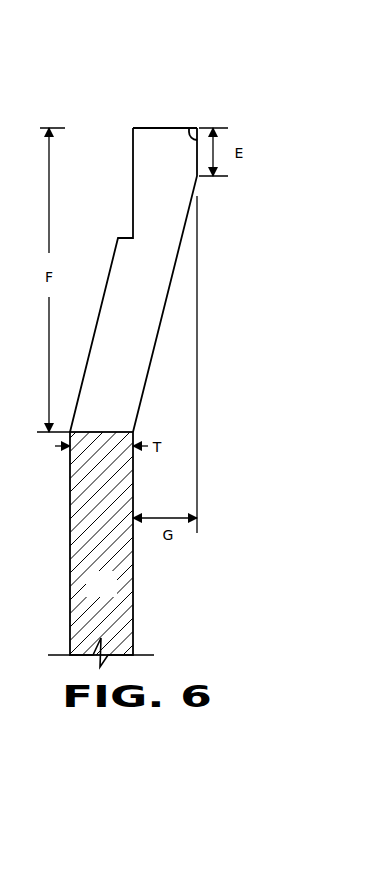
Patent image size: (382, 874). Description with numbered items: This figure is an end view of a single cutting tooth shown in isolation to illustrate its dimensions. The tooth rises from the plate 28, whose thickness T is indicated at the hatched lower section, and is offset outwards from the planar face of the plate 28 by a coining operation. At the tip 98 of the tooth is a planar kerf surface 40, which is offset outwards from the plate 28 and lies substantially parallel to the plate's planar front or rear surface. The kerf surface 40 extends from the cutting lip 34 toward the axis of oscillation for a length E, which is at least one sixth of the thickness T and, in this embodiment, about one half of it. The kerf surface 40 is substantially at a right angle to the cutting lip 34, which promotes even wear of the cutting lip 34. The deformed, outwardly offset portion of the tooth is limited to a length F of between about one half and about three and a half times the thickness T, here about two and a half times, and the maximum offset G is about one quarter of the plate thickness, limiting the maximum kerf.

The tip 98 is at (177, 170).
The cutting lip 34 is at (167, 128).
The kerf surface 40 is at (190, 128).
The plate 28 is at (113, 595).